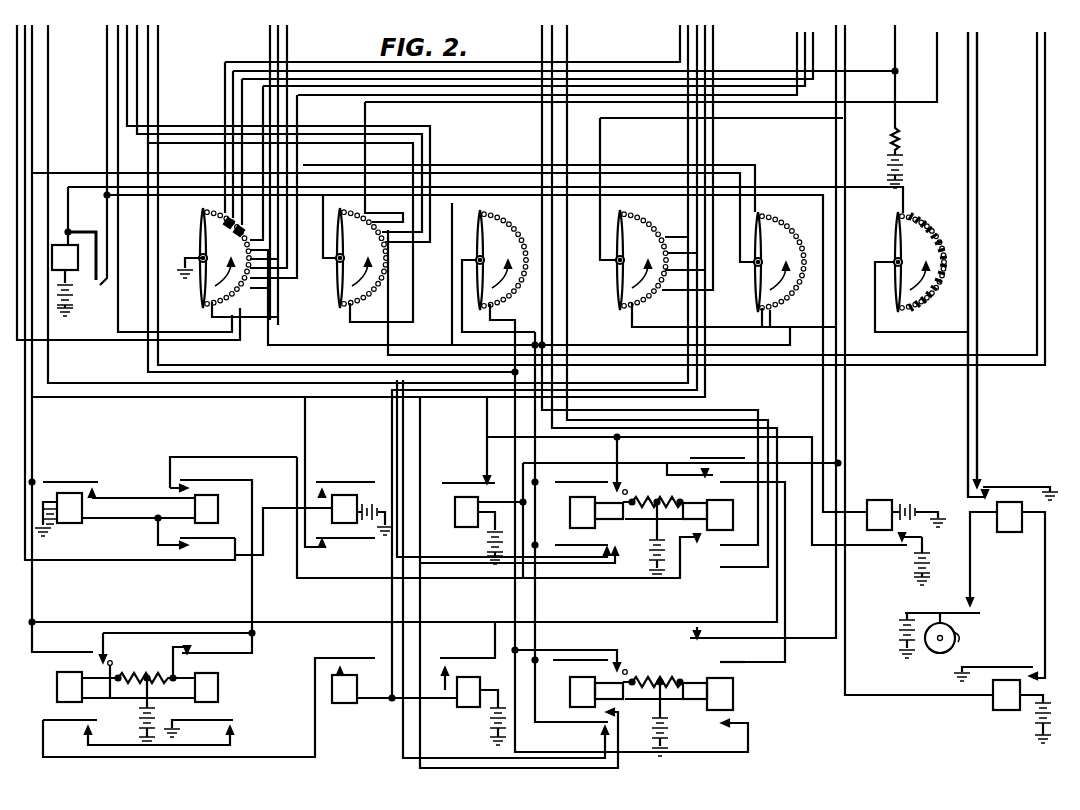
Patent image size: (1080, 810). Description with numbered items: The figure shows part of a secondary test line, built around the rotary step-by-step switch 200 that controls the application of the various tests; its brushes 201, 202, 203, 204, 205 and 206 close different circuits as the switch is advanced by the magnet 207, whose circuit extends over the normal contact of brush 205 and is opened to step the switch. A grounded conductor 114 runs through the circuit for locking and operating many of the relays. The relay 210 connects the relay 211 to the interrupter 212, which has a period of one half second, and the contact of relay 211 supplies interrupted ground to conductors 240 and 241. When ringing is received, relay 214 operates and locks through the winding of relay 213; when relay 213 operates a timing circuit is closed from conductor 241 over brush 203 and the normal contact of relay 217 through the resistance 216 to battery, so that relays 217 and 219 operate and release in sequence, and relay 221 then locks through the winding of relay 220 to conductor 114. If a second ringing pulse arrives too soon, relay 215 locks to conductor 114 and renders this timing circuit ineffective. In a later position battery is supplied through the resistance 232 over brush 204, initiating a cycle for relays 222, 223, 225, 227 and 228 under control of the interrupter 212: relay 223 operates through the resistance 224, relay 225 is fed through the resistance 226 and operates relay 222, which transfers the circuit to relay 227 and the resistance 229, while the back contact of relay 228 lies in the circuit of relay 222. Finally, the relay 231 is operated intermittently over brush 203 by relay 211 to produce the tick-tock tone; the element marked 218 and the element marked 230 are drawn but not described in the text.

The conductor 114 is at (810, 120).
The rotary step-by-step switch 200 is at (531, 396).
The brush 201 is at (214, 258).
The brush 202 is at (362, 258).
The brush 203 is at (502, 260).
The brush 204 is at (642, 260).
The brush 205 is at (780, 262).
The brush 206 is at (920, 262).
The magnet 207 is at (72, 270).
The relay 210 is at (1004, 710).
The relay 211 is at (1008, 532).
The interrupter 212 is at (960, 635).
The relay 213 is at (236, 470).
The relay 214 is at (115, 517).
The relay 215 is at (340, 523).
The resistance 216 is at (127, 675).
The relay 217 is at (57, 686).
The conductor 218 is at (170, 633).
The relay 219 is at (218, 686).
The relay 220 is at (345, 703).
The relay 221 is at (462, 707).
The relay 222 is at (458, 512).
The relay 223 is at (580, 497).
The resistance 224 is at (640, 500).
The relay 225 is at (722, 530).
The resistance 226 is at (672, 475).
The relay 227 is at (584, 677).
The relay 228 is at (733, 690).
The resistance 229 is at (645, 680).
The relay contact 230 is at (676, 680).
The relay 231 is at (874, 500).
The resistance 232 is at (901, 132).
The conductor 240 is at (977, 156).
The conductor 241 is at (968, 398).